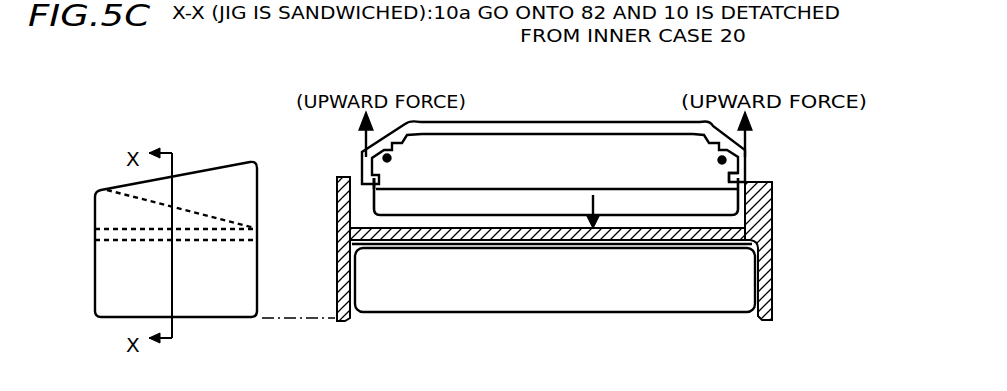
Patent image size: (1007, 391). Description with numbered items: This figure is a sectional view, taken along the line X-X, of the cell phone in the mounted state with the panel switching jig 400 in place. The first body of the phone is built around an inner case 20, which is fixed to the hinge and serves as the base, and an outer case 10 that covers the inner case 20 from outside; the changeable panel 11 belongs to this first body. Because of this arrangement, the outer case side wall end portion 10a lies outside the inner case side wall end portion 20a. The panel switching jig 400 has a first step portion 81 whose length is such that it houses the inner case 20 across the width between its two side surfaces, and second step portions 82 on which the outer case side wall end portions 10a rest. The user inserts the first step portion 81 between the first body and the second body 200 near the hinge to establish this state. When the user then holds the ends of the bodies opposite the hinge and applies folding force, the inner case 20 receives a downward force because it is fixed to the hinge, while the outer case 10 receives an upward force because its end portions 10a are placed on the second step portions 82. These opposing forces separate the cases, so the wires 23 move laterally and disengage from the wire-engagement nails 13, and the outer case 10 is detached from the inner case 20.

The outer case 10 is at (544, 119).
The outer case side wall end portion 10a is at (356, 188).
The changeable panel 11 is at (593, 123).
The wire-engagement nail 13 is at (726, 173).
The inner case 20 is at (556, 138).
The inner case side wall end portion 20a is at (377, 210).
The wire 23 is at (720, 160).
The first step portion 81 is at (385, 240).
The second step portion 82 is at (340, 247).
The second body 200 is at (555, 280).
The panel switching jig 400 is at (773, 233).